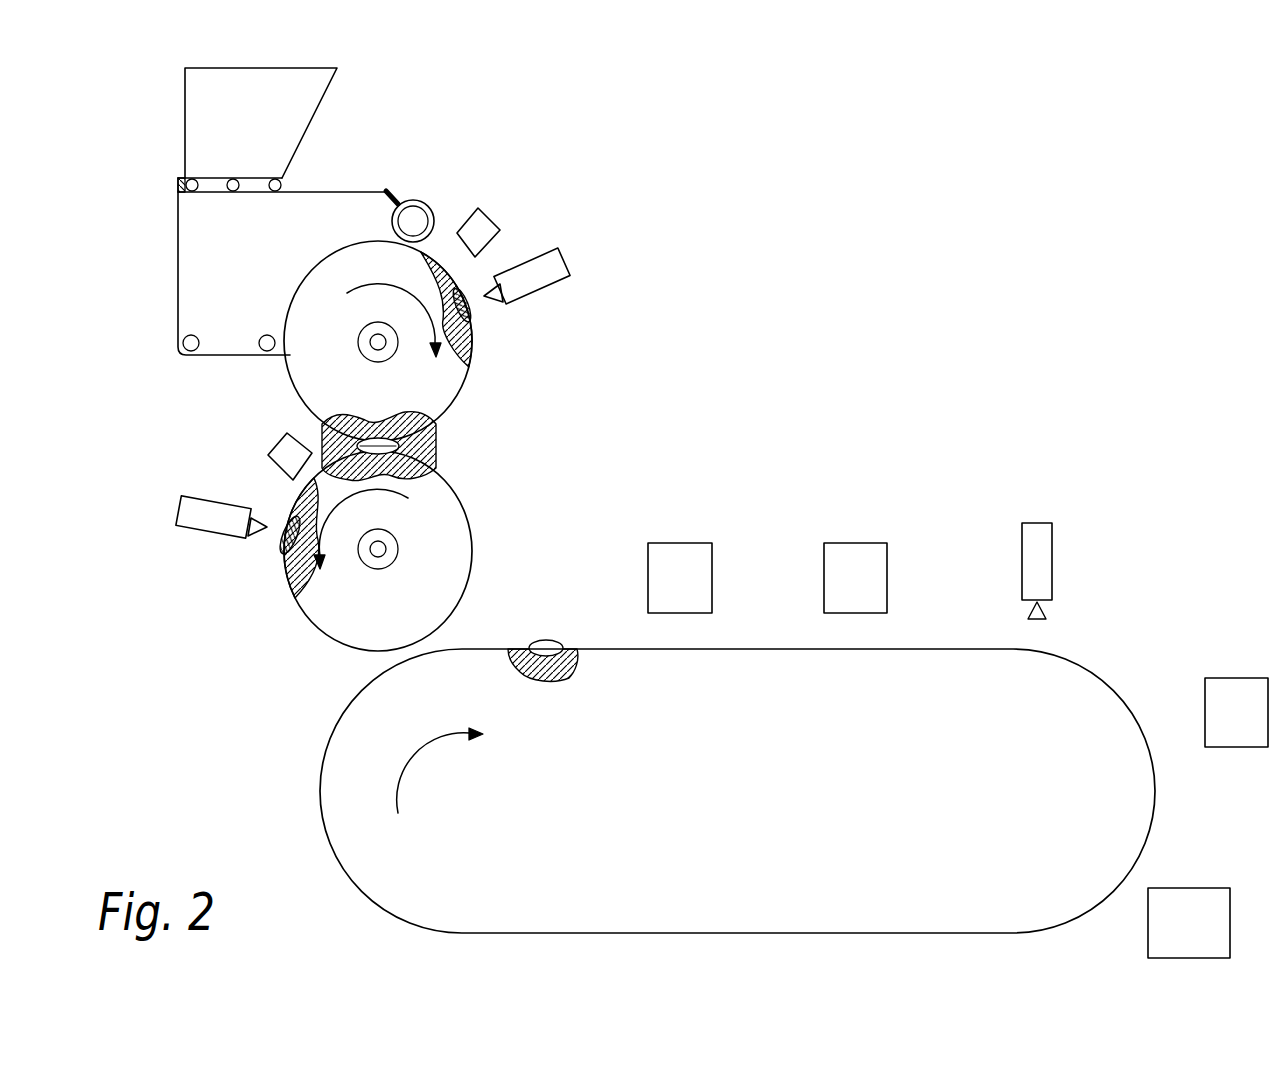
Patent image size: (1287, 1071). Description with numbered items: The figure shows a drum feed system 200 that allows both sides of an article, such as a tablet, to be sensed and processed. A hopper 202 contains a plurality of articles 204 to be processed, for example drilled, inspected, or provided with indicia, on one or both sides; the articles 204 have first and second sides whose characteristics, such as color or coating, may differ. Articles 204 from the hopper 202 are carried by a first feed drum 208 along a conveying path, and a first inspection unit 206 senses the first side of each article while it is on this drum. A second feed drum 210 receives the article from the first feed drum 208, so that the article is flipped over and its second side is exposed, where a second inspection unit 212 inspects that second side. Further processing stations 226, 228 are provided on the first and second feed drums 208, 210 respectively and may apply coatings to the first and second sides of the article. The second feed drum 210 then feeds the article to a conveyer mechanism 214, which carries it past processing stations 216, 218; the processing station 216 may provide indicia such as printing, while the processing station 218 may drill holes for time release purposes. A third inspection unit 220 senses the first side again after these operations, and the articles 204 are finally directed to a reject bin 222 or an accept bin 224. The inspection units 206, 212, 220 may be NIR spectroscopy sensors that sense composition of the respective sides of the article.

The drum feed system 200 is at (790, 271).
The hopper 202 is at (318, 112).
The articles 204 is at (472, 313).
The first inspection unit 206 is at (547, 260).
The first feed drum 208 is at (300, 371).
The second feed drum 210 is at (317, 607).
The second inspection unit 212 is at (193, 520).
The conveyer mechanism 214 is at (935, 648).
The processing station 216 is at (676, 555).
The processing station 218 is at (857, 558).
The third inspection unit 220 is at (1042, 551).
The reject bin 222 is at (1243, 695).
The accept bin 224 is at (1203, 900).
The processing station 226 is at (483, 226).
The processing station 228 is at (278, 452).